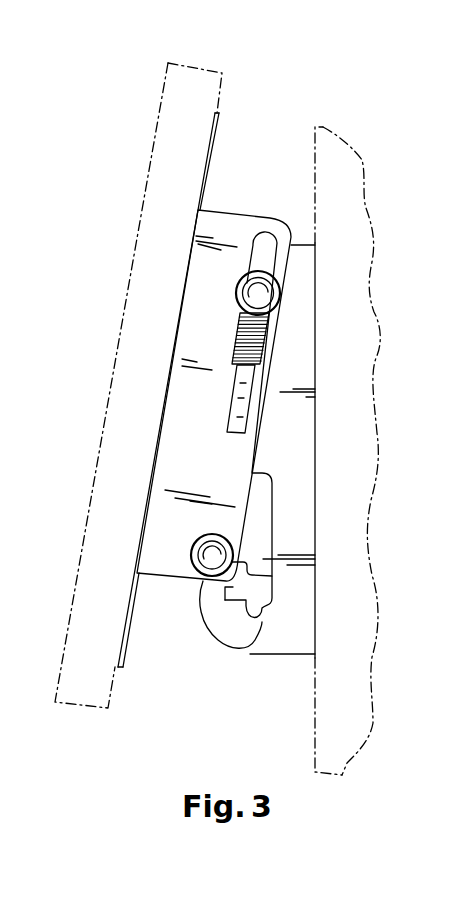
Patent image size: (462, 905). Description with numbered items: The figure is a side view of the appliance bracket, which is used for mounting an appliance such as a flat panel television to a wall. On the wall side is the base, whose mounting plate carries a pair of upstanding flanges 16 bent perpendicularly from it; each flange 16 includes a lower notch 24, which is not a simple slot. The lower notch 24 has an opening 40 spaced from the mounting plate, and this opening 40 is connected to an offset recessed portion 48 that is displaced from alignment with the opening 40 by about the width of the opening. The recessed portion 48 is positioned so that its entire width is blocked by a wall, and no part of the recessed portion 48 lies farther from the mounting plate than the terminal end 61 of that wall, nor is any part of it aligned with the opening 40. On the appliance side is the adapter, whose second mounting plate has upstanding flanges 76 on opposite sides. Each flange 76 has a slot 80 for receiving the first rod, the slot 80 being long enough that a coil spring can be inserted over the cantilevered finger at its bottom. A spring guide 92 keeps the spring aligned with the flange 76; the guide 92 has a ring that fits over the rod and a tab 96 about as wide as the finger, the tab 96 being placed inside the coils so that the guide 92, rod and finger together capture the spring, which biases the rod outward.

The upstanding flange 16 is at (297, 637).
The lower notch 24 is at (232, 588).
The opening 40 is at (240, 566).
The offset recessed portion 48 is at (262, 605).
The terminal end of wall 61 is at (250, 650).
The upstanding flange of adapter 76 is at (183, 473).
The slot 80 is at (271, 248).
The spring guide 92 is at (248, 390).
The tab 96 is at (233, 427).